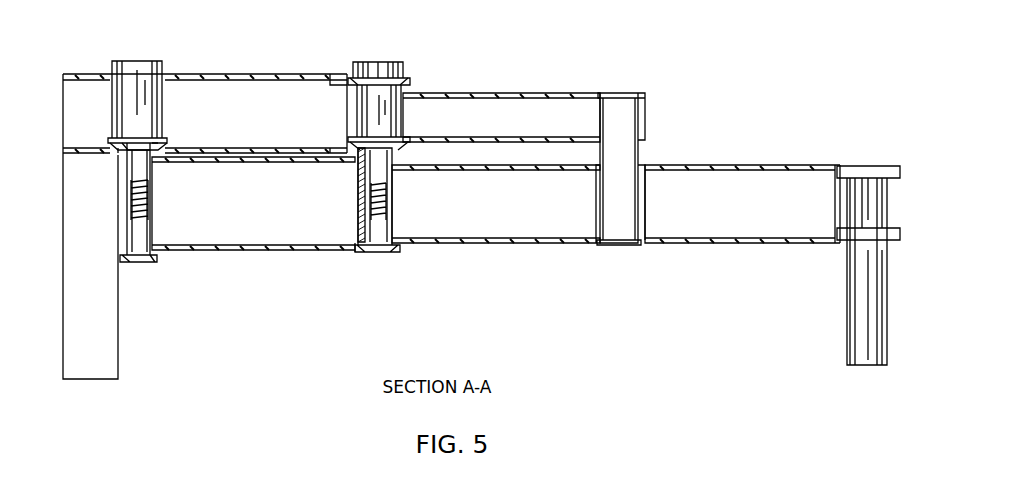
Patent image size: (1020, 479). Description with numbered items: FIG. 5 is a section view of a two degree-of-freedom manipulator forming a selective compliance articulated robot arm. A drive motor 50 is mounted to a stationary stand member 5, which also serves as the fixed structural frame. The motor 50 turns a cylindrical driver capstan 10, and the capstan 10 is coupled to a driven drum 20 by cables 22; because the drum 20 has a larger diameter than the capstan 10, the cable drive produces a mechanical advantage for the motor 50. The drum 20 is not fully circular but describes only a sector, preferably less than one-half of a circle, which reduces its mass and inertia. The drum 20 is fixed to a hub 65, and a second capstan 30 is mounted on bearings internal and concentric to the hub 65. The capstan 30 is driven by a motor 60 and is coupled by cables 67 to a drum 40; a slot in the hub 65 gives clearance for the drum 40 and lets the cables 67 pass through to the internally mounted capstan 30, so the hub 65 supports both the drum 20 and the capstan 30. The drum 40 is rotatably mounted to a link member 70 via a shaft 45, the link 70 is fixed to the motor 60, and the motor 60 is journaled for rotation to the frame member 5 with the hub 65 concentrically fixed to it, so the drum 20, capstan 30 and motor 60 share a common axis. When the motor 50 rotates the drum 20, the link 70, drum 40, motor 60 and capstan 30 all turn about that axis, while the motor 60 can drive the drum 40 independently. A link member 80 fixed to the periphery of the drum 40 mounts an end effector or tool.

The stationary stand member 5 is at (205, 72).
The cylindrical driver capstan 10 is at (137, 262).
The driven drum 20 is at (232, 247).
The cables 22 is at (153, 198).
The capstan 30 is at (377, 252).
The drum 40 is at (520, 243).
The shaft 45 is at (640, 151).
The drive motor 50 is at (130, 60).
The motor 60 is at (372, 60).
The hub 65 is at (362, 215).
The cables 67 is at (392, 208).
The link member 70 is at (482, 91).
The link member 80 is at (887, 276).